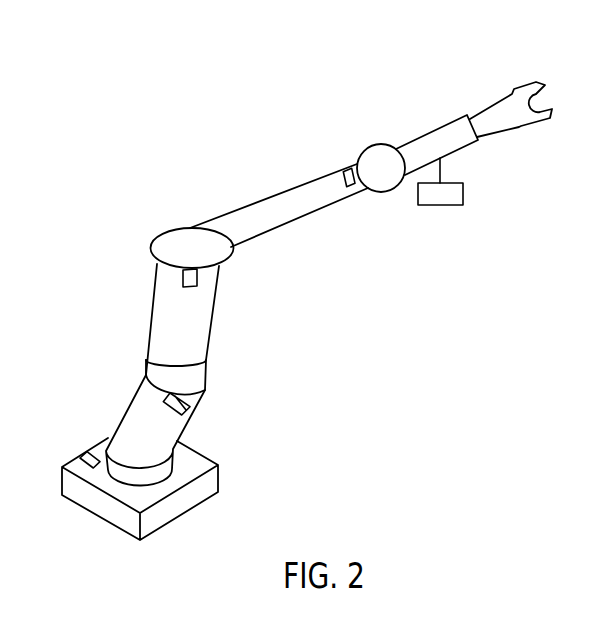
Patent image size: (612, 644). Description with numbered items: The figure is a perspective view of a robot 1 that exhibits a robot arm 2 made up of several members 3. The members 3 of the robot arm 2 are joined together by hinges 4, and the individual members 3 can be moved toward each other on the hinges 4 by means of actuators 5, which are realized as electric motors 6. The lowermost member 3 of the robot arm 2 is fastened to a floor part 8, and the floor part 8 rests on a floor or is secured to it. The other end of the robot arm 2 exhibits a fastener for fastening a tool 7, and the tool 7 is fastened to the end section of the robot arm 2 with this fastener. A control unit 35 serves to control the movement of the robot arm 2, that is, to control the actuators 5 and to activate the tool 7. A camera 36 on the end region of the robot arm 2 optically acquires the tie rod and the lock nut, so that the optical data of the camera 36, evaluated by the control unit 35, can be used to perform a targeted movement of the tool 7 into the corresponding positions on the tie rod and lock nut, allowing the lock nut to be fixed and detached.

The robot 1 is at (400, 310).
The robot arm 2 is at (263, 335).
The member 3 is at (138, 410).
The hinge 4 is at (165, 240).
The actuator 5 is at (259, 271).
The electric motor 6 is at (176, 408).
The tool 7 is at (517, 92).
The floor part 8 is at (170, 513).
The control unit 35 is at (88, 455).
The camera 36 is at (443, 205).